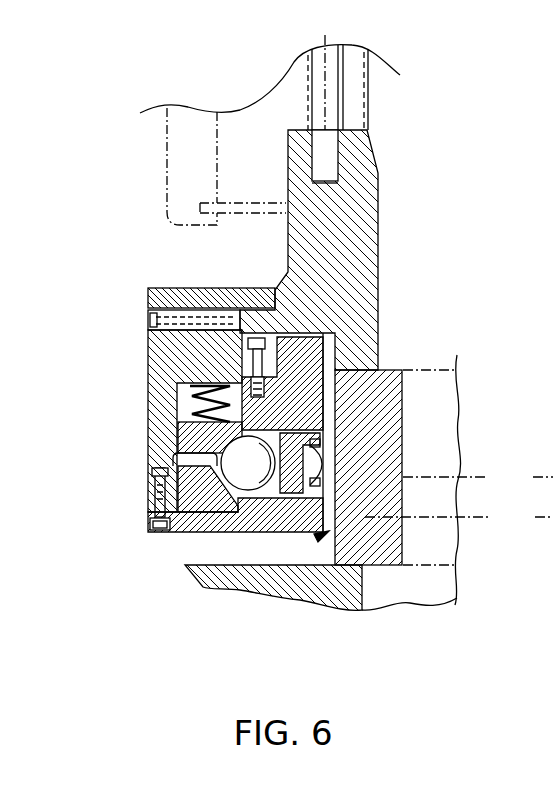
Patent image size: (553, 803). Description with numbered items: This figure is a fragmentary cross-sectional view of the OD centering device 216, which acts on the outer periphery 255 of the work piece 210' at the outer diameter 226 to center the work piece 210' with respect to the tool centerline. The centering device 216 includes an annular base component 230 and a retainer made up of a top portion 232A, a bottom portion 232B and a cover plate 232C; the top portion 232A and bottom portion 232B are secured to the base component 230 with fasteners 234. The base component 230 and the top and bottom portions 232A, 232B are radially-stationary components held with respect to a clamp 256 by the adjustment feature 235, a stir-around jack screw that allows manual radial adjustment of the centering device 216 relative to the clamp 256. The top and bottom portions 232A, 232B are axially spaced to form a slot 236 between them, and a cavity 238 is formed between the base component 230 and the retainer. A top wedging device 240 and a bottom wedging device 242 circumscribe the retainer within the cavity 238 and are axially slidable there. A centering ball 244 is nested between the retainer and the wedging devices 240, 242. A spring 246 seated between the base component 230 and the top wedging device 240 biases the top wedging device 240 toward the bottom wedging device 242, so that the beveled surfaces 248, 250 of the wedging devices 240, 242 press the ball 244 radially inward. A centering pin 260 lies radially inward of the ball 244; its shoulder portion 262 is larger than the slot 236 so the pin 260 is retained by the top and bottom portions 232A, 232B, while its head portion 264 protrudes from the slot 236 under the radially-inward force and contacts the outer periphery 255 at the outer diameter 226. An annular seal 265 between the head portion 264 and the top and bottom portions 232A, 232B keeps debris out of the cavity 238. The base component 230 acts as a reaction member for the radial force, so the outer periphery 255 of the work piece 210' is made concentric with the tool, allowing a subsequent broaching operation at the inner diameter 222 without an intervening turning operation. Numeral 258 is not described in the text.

The clamp 256 is at (380, 234).
The adjustment feature 235 is at (208, 326).
The fasteners 234 is at (204, 288).
The cover plate 232C is at (253, 288).
The top portion 232A is at (300, 357).
The bottom portion 232B is at (240, 561).
The base component 230 is at (150, 360).
The spring 246 is at (150, 390).
The cavity 238 is at (188, 400).
The top wedging device 240 is at (150, 433).
The beveled surface 250 is at (200, 460).
The centering ball 244 is at (212, 496).
The bottom wedging device 242 is at (150, 526).
The centering device 216 is at (150, 547).
The beveled surface 248 is at (334, 371).
The shoulder portion 262 is at (338, 398).
The slot 236 is at (399, 458).
The head portion 264 is at (338, 455).
The inner diameter 222 is at (478, 478).
The outer diameter 226 is at (459, 518).
The work piece 210' is at (448, 482).
The annular seal 265 is at (305, 447).
The centering pin 260 is at (283, 561).
The outer periphery 255 is at (290, 566).
The base plate 258 is at (345, 600).